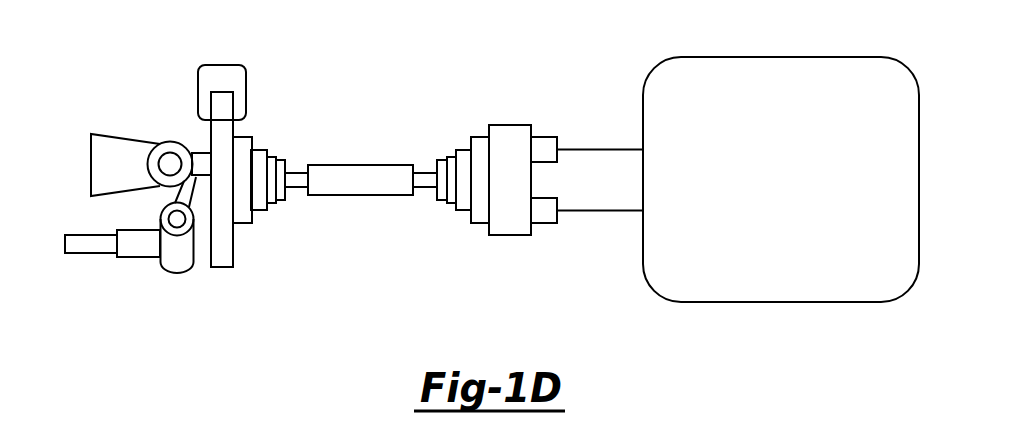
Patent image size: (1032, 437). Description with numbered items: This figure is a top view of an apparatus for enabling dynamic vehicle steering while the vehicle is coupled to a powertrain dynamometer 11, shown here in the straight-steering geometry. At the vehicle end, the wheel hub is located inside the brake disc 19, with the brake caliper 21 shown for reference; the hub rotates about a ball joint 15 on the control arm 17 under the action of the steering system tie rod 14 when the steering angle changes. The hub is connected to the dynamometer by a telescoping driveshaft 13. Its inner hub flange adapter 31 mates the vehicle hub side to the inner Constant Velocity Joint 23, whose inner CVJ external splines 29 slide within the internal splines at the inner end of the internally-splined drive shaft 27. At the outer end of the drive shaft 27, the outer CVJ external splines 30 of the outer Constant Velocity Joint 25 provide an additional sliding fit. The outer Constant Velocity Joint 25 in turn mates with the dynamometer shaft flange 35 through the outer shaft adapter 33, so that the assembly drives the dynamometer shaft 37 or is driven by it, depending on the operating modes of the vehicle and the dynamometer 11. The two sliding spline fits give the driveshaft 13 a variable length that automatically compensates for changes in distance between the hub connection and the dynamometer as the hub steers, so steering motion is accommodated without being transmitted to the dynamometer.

The powertrain dynamometer 11 is at (800, 85).
The telescoping driveshaft 13 is at (507, 259).
The steering system tie rod 14 is at (145, 247).
The ball joint 15 is at (170, 164).
The control arm 17 is at (110, 165).
The brake disc 19 is at (220, 127).
The brake caliper 21 is at (222, 75).
The inner Constant Velocity Joint 23 is at (268, 160).
The outer Constant Velocity Joint 25 is at (463, 162).
The internally-splined drive shaft 27 is at (373, 182).
The inner CVJ external splines 29 is at (298, 183).
The outer CVJ external splines 30 is at (423, 183).
The inner hub flange adapter 31 is at (242, 217).
The outer shaft adapter 33 is at (480, 150).
The dynamometer shaft flange 35 is at (515, 220).
The dynamometer shaft 37 is at (597, 175).